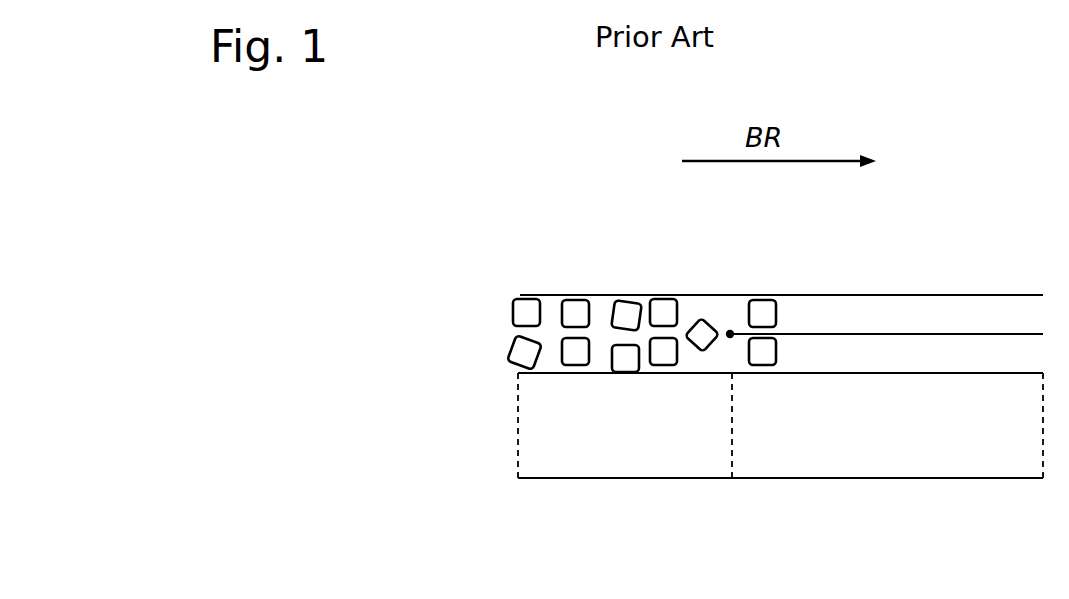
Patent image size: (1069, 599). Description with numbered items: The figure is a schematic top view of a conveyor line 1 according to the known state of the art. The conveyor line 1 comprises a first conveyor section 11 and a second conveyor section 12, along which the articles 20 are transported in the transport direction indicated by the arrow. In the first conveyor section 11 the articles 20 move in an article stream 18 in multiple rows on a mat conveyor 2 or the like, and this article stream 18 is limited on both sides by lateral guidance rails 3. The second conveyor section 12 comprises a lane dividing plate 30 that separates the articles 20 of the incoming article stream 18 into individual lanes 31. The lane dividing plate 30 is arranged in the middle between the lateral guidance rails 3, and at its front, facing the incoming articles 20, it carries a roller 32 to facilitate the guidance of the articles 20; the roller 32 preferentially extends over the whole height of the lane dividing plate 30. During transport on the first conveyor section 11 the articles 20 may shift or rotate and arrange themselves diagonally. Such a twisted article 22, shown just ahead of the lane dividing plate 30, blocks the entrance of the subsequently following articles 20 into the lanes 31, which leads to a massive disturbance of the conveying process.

The conveyor line 1 is at (400, 539).
The mat conveyor 2 is at (548, 345).
The lateral guidance rails 3 is at (612, 294).
The first conveyor section 11 is at (625, 478).
The second conveyor section 12 is at (887, 478).
The article stream 18 is at (548, 313).
The articles 20 is at (517, 306).
The twisted article 22 is at (694, 318).
The lane dividing plate 30 is at (797, 334).
The lanes 31 is at (876, 326).
The roller 32 is at (733, 330).